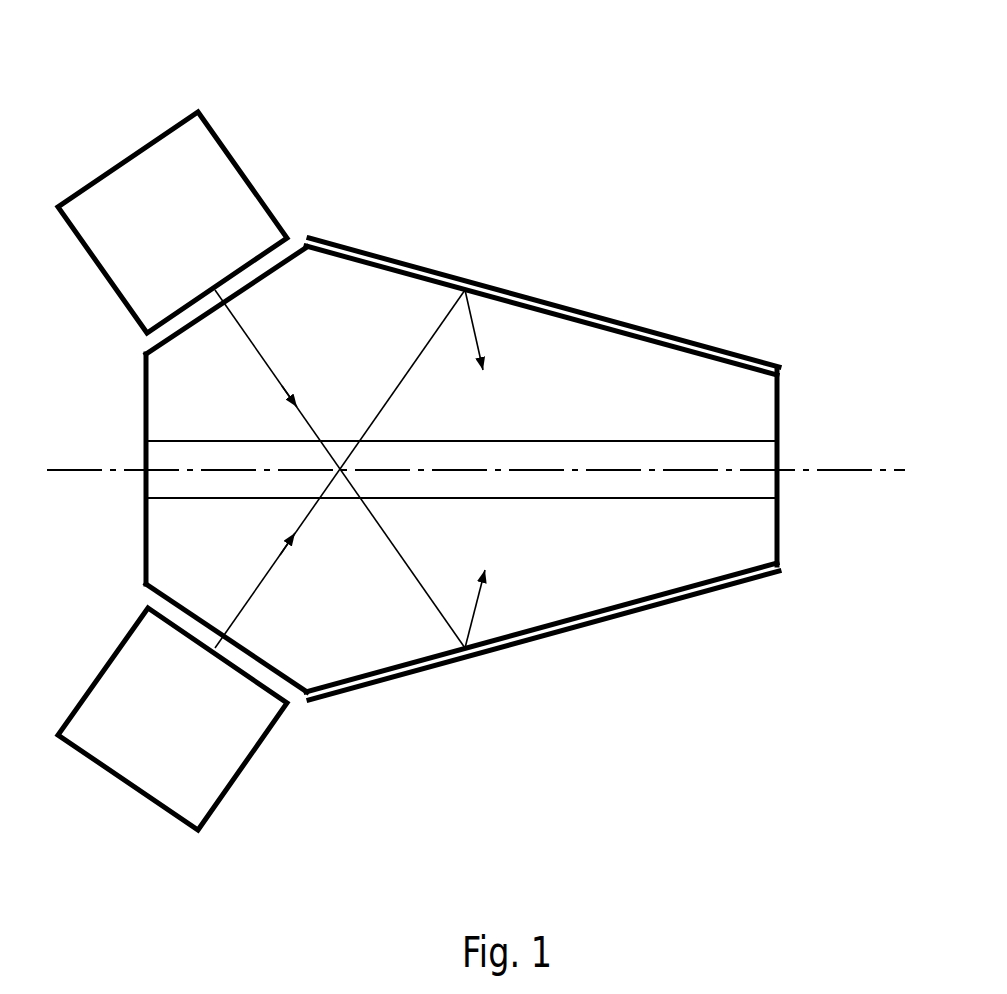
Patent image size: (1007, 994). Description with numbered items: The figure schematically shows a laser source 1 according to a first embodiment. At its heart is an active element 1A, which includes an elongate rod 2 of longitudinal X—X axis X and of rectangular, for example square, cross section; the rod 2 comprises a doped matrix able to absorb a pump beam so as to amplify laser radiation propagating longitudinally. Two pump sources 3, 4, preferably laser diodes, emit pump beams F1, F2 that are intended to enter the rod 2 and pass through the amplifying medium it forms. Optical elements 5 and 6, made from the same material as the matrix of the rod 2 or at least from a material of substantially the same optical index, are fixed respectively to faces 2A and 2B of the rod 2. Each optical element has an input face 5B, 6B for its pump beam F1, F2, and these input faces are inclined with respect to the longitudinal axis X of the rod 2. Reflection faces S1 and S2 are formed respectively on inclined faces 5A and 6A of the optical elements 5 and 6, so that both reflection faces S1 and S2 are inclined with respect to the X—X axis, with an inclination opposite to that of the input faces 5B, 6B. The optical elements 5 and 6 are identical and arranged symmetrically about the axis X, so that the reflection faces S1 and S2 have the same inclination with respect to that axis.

The laser source 1 is at (693, 180).
The active element 1A is at (778, 538).
The elongate rod 2 is at (752, 470).
The face of the rod 2A is at (587, 437).
The face of the rod 2B is at (587, 502).
The pump source 3 is at (216, 167).
The pump source 4 is at (232, 763).
The optical element 5 is at (725, 373).
The inclined face 5A is at (602, 332).
The input face 5B is at (268, 281).
The optical element 6 is at (515, 617).
The inclined face 6A is at (570, 618).
The input face 6B is at (264, 655).
The reflection face S1 is at (425, 265).
The reflection face S2 is at (633, 614).
The pump beam F1 is at (257, 353).
The pump beam F2 is at (247, 602).
The longitudinal axis X is at (476, 450).